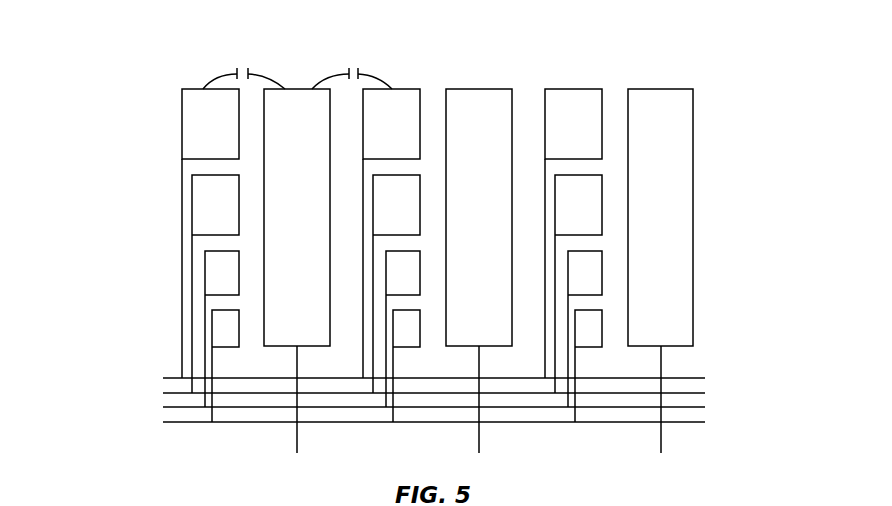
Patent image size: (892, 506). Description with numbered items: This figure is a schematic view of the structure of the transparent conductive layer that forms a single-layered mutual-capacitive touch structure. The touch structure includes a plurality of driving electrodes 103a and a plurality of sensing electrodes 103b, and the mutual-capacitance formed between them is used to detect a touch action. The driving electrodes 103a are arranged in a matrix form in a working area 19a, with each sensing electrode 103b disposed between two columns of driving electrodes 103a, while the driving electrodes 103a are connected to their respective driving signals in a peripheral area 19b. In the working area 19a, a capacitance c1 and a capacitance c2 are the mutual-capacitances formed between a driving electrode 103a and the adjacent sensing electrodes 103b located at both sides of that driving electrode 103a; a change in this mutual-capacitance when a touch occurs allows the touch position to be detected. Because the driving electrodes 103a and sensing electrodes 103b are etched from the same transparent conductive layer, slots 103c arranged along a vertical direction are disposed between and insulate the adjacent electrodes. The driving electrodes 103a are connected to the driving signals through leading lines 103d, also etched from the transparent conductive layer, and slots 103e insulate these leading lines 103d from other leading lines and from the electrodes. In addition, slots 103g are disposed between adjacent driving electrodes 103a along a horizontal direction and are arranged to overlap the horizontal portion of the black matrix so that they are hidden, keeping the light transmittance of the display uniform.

The working area 19a is at (731, 98).
The peripheral area 19b is at (733, 377).
The driving electrode 103a is at (190, 147).
The sensing electrode 103b is at (297, 127).
The slot 103c is at (428, 139).
The leading line 103d is at (176, 300).
The slot 103e is at (550, 218).
The slot 103g is at (200, 244).
The capacitance c1 is at (244, 65).
The capacitance c2 is at (352, 65).